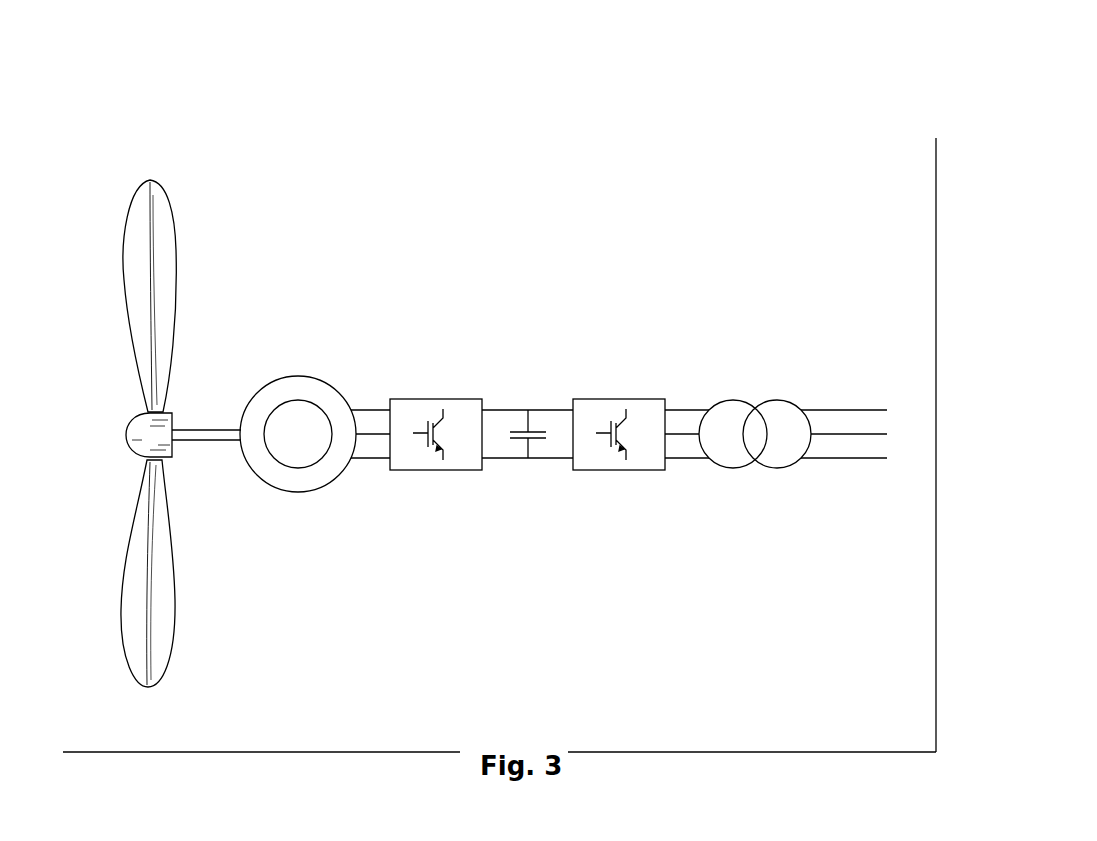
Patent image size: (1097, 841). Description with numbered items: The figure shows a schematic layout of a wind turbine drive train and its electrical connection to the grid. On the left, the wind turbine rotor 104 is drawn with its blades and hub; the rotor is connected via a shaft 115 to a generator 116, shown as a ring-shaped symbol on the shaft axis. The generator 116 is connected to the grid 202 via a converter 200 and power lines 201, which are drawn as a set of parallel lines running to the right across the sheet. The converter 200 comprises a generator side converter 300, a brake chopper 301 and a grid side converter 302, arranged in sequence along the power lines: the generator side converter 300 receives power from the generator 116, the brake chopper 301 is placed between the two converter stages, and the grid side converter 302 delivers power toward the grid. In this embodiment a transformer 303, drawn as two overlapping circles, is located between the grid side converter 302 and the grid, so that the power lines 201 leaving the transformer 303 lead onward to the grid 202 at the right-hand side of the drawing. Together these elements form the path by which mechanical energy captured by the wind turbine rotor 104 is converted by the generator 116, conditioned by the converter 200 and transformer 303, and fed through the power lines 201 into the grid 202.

The wind turbine rotor 104 is at (153, 148).
The shaft 115 is at (206, 438).
The generator 116 is at (283, 350).
The converter 200 is at (587, 148).
The power lines 201 is at (838, 470).
The grid 202 is at (900, 395).
The generator side converter 300 is at (405, 410).
The brake chopper 301 is at (526, 383).
The grid side converter 302 is at (593, 410).
The transformer 303 is at (757, 382).